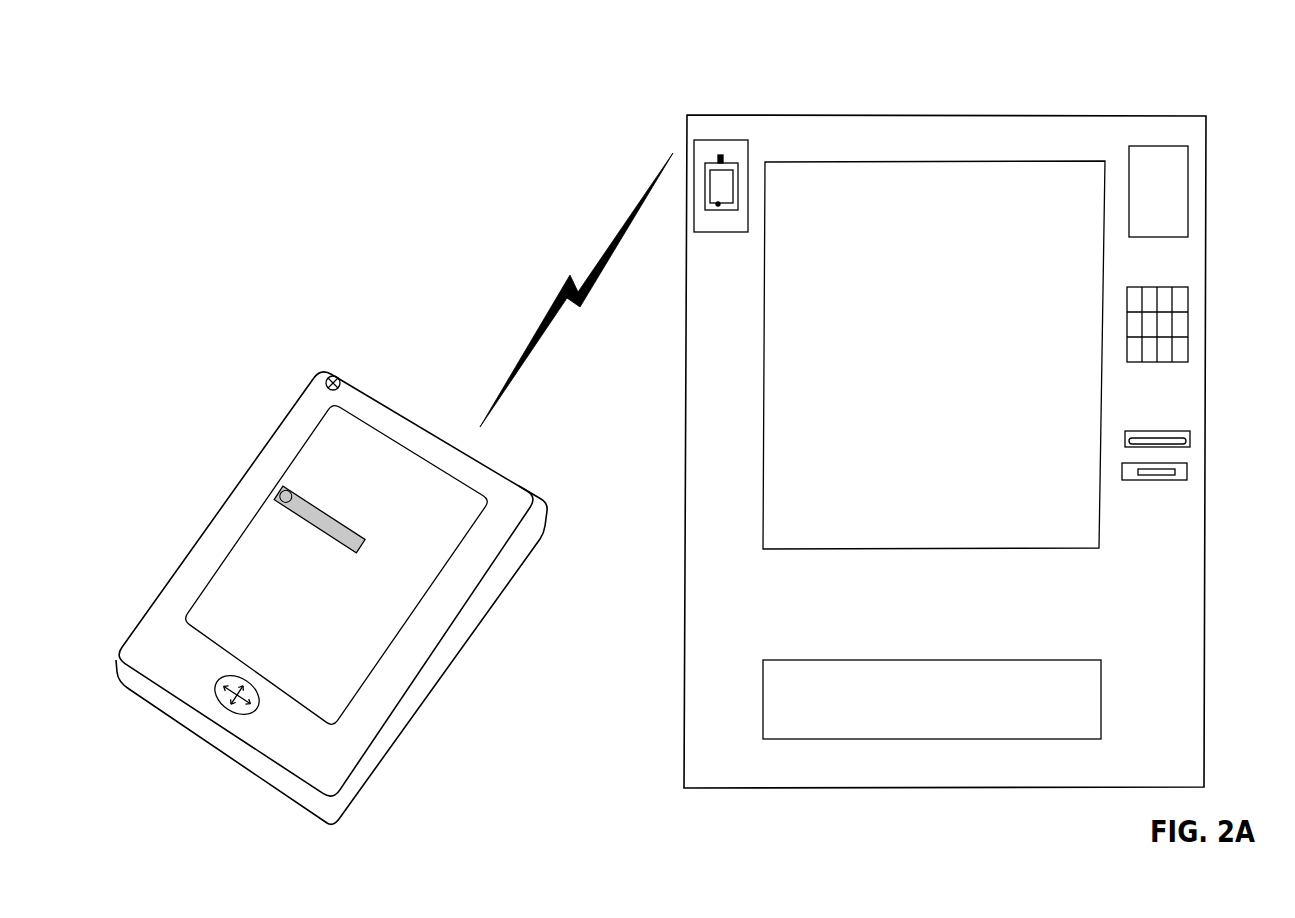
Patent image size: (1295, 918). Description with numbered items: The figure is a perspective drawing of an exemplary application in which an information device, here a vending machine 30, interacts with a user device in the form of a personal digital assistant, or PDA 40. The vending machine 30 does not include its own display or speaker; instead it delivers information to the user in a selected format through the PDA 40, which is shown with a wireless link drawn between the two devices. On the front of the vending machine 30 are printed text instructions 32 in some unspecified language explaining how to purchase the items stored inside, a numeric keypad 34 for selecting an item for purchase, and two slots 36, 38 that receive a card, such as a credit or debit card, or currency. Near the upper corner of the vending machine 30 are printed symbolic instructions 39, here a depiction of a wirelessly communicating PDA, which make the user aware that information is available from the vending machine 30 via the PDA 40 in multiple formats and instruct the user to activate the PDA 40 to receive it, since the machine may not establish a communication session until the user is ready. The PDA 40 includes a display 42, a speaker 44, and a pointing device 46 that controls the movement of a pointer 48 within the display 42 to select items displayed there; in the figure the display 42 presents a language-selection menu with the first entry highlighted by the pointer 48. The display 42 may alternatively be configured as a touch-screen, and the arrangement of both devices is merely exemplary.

The vending machine 30 is at (1102, 78).
The printed text instructions 32 is at (1181, 170).
The numeric keypad 34 is at (1179, 290).
The slot 36 is at (1188, 432).
The slot 38 is at (1188, 470).
The printed symbolic instructions 39 is at (712, 145).
The personal digital assistant (PDA) 40 is at (262, 348).
The display 42 is at (358, 435).
The speaker 44 is at (341, 373).
The pointing device 46 is at (218, 699).
The pointer 48 is at (282, 486).